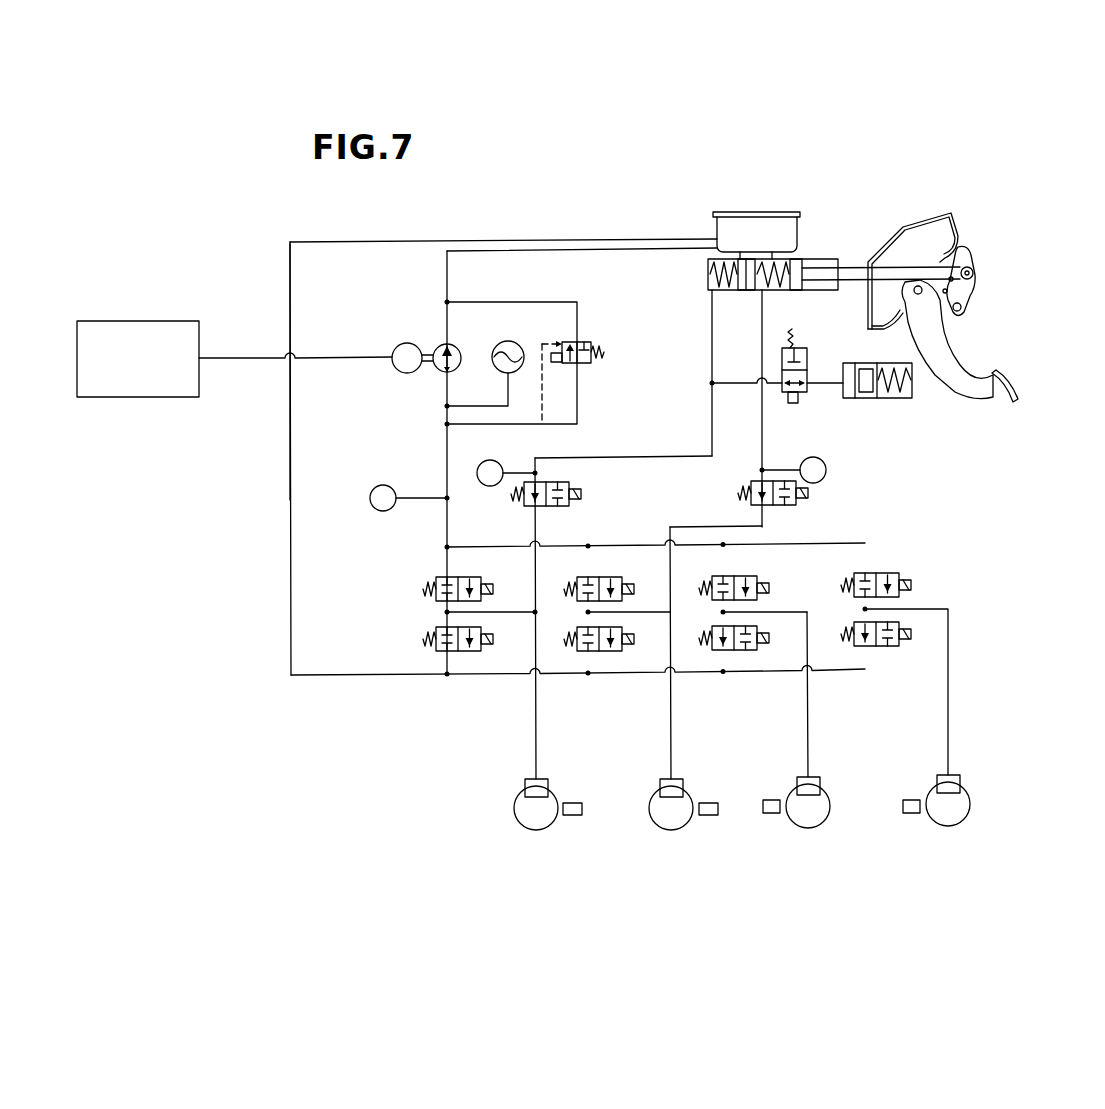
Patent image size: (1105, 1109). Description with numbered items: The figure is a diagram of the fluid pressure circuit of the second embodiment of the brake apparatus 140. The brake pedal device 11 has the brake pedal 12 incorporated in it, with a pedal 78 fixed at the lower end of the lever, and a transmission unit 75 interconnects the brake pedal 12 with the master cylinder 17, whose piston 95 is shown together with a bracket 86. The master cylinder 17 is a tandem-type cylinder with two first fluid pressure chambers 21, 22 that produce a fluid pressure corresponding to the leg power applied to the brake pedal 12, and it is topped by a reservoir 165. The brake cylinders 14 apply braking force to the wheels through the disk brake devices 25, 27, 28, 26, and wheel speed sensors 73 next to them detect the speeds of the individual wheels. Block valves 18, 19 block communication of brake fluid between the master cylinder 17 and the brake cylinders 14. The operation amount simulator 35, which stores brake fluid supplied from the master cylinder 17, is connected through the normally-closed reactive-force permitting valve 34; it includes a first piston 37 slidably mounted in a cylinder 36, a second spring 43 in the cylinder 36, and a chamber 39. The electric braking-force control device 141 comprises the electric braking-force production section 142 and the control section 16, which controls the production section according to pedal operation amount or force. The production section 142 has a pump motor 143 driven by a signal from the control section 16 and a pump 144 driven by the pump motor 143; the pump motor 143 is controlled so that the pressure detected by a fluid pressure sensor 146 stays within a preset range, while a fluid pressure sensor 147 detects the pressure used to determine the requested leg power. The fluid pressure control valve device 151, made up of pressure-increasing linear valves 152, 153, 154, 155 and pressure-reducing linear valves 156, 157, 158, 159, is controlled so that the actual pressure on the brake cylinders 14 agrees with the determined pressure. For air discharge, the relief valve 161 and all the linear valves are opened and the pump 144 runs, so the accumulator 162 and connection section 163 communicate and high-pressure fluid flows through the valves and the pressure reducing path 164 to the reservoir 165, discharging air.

The brake pedal device 11 is at (969, 268).
The brake pedal 12 is at (958, 360).
The brake cylinders 14 is at (746, 808).
The control section 16 is at (136, 320).
The master cylinder 17 is at (730, 211).
The block valve 18 is at (750, 484).
The block valve 19 is at (570, 482).
The first fluid pressure chamber 21 is at (781, 292).
The first fluid pressure chamber 22 is at (731, 292).
The disk brake device 25 is at (533, 821).
The disk brake device 26 is at (950, 816).
The disk brake device 27 is at (668, 821).
The disk brake device 28 is at (806, 818).
The reactive-force permitting valve 34 is at (780, 385).
The operation amount simulator 35 is at (881, 406).
The cylinder 36 is at (908, 400).
The first piston 37 is at (895, 391).
The simulator chamber 39 is at (849, 399).
The second spring 43 is at (911, 380).
The wheel speed sensors 73 is at (571, 816).
The transmission unit 75 is at (985, 250).
The pedal 78 is at (1017, 391).
The pedal bracket 86 is at (890, 270).
The piston 95 is at (834, 264).
The brake apparatus 140 is at (543, 194).
The electric braking-force control device 141 is at (226, 252).
The electric braking-force production section 142 is at (394, 347).
The pump motor 143 is at (395, 372).
The pump 144 is at (438, 372).
The fluid pressure sensor 146 is at (368, 497).
The fluid pressure sensor 147 is at (490, 487).
The fluid pressure control valve device 151 is at (674, 580).
The pressure-increasing linear valve 152 is at (436, 578).
The pressure-increasing linear valve 153 is at (608, 577).
The pressure-increasing linear valve 154 is at (752, 576).
The pressure-increasing linear valve 155 is at (892, 573).
The pressure-reducing linear valve 156 is at (436, 645).
The pressure-reducing linear valve 157 is at (610, 651).
The pressure-reducing linear valve 158 is at (745, 650).
The pressure-reducing linear valve 159 is at (893, 647).
The relief valve 161 is at (583, 342).
The accumulator 162 is at (497, 346).
The connection section 163 is at (448, 301).
The pressure reducing path 164 is at (288, 504).
The reservoir 165 is at (770, 222).